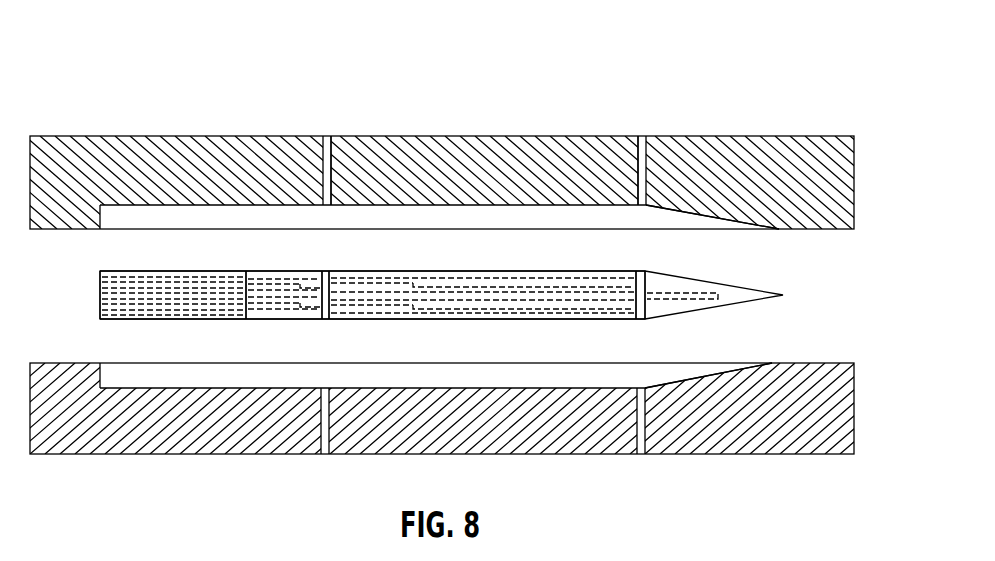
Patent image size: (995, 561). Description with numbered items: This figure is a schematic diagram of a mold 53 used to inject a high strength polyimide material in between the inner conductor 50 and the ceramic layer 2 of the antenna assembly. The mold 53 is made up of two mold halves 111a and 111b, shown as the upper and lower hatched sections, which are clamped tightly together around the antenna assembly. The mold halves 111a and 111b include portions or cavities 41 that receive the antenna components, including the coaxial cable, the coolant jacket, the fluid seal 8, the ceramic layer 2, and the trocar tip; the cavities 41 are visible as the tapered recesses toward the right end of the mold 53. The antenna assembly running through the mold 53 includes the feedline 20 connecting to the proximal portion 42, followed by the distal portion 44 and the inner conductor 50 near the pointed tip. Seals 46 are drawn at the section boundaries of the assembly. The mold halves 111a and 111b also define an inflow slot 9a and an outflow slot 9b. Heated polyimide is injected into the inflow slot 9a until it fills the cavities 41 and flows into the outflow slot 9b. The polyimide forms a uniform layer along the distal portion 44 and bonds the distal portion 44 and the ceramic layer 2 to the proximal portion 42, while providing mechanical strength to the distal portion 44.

The ceramic layer 2 is at (530, 319).
The fluid seal 8 is at (280, 319).
The inflow slot 9a is at (325, 136).
The outflow slot 9b is at (645, 135).
The feedline 20 is at (192, 270).
The cavities 41 is at (700, 222).
The proximal portion 42 is at (287, 270).
The distal portion 44 is at (518, 268).
The sealing ring 46 is at (327, 319).
The inner conductor 50 is at (693, 293).
The mold 53 is at (118, 122).
The mold half 111a is at (484, 137).
The mold half 111b is at (483, 453).